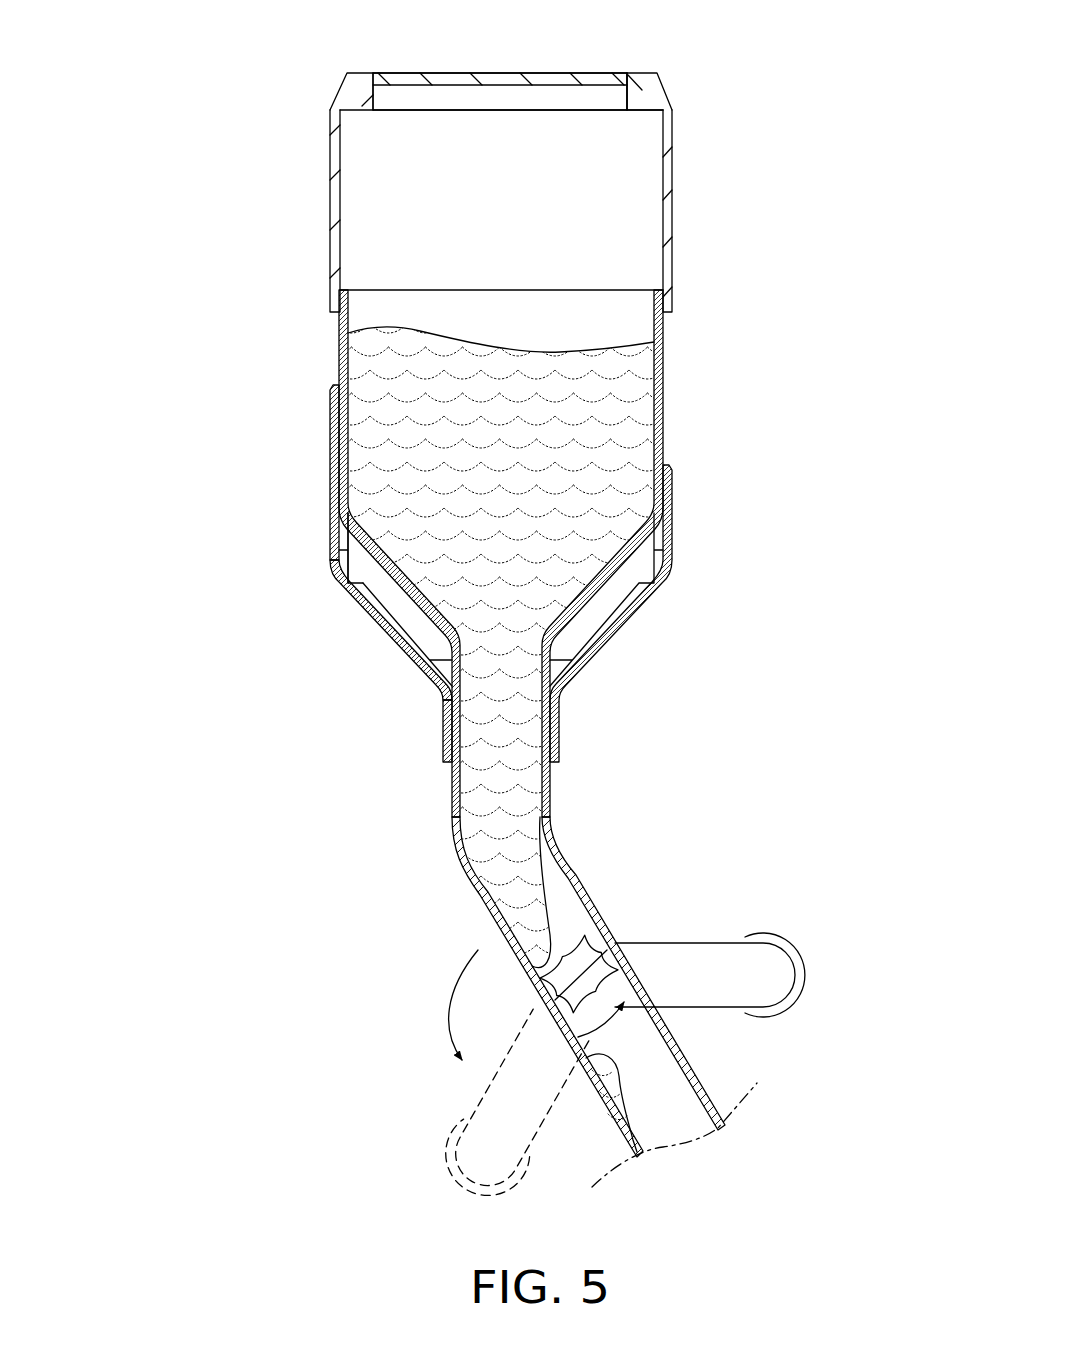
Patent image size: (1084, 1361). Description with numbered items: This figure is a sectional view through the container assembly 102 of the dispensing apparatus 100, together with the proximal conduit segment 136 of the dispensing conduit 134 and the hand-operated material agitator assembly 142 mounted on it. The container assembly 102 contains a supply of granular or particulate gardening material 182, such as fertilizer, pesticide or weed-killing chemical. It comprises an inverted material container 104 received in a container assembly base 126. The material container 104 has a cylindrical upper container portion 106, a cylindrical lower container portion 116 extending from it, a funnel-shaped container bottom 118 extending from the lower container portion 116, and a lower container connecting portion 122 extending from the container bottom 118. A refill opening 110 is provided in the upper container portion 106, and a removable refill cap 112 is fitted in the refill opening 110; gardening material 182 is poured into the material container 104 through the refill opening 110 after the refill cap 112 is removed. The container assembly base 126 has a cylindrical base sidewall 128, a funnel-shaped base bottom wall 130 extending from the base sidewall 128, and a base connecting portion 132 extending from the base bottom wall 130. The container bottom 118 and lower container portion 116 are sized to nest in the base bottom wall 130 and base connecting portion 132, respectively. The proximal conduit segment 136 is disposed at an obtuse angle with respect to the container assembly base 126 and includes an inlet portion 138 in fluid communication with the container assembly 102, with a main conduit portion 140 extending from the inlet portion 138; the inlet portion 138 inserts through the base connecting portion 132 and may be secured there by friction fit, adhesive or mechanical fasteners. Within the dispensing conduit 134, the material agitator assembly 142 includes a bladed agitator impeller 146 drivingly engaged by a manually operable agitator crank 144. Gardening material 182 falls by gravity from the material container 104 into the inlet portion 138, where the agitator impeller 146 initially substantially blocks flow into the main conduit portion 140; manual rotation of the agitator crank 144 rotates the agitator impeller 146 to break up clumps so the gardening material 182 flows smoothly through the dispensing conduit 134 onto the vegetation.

The dispensing apparatus 100 is at (290, 62).
The container assembly 102 is at (313, 134).
The material container 104 is at (333, 201).
The upper container portion 106 is at (673, 170).
The refill opening 110 is at (627, 96).
The removable refill cap 112 is at (452, 70).
The lower container portion 116 is at (339, 340).
The container bottom 118 is at (424, 616).
The lower container connecting portion 122 is at (551, 678).
The container assembly base 126 is at (326, 446).
The base sidewall 128 is at (337, 493).
The base bottom wall 130 is at (356, 594).
The base connecting portion 132 is at (442, 734).
The dispensing conduit 134 is at (441, 826).
The proximal conduit segment 136 is at (590, 881).
The inlet portion 138 is at (551, 781).
The main conduit portion 140 is at (695, 1066).
The material agitator assembly 142 is at (710, 860).
The agitator crank 144 is at (722, 958).
The agitator impeller 146 is at (582, 950).
The gardening material 182 is at (497, 380).